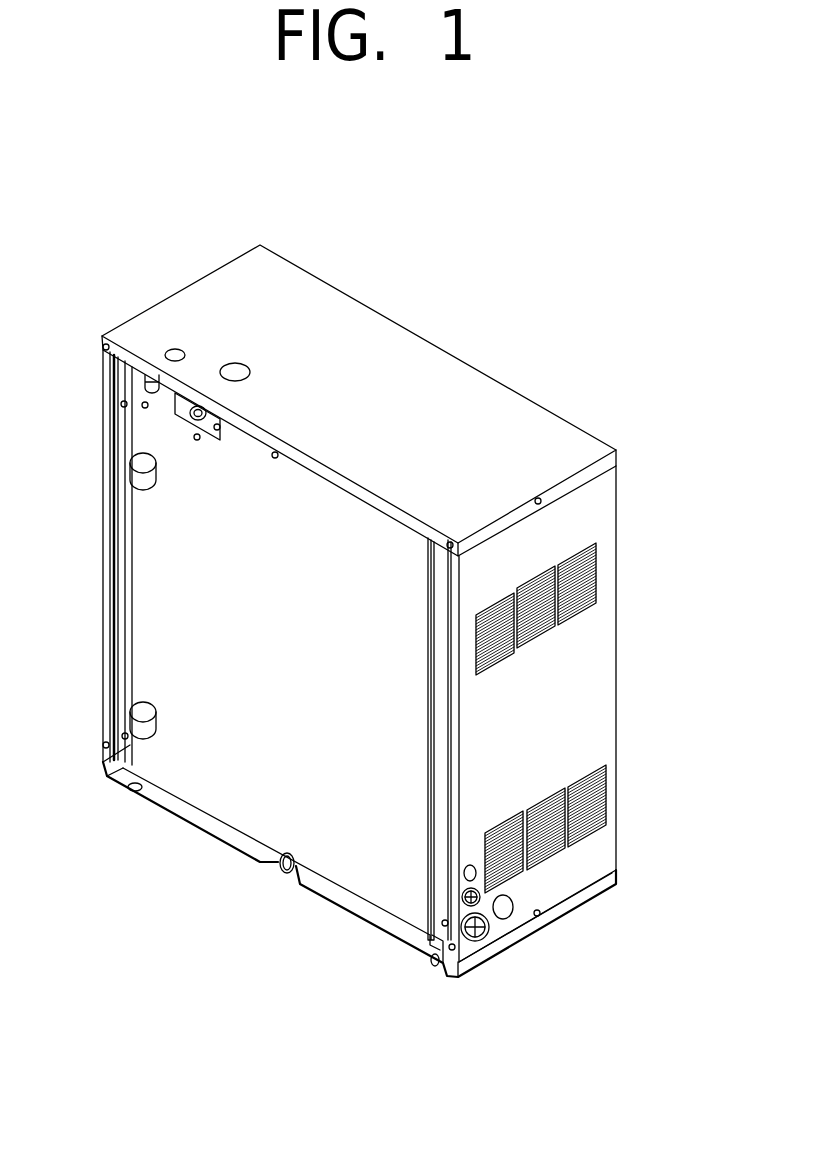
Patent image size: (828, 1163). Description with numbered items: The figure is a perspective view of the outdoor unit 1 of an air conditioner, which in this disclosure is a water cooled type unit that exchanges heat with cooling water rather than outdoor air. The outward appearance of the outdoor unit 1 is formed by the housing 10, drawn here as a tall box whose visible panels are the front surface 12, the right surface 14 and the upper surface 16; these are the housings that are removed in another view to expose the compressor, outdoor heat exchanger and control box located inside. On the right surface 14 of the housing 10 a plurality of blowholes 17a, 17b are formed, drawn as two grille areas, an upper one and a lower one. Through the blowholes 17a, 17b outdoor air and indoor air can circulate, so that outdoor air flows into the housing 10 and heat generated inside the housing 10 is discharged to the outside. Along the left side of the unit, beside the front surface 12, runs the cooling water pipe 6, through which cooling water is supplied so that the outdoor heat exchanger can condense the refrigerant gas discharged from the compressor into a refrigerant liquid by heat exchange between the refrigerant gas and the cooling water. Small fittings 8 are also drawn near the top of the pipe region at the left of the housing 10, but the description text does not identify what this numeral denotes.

The outdoor unit 1 is at (390, 177).
The housing 10 is at (160, 289).
The front surface 12 is at (227, 767).
The right surface 14 is at (603, 688).
The upper surface 16 is at (492, 415).
The blowhole 17a is at (590, 791).
The blowhole 17b is at (588, 583).
The cooling water pipe 6 is at (120, 478).
The hanger 8 is at (200, 412).